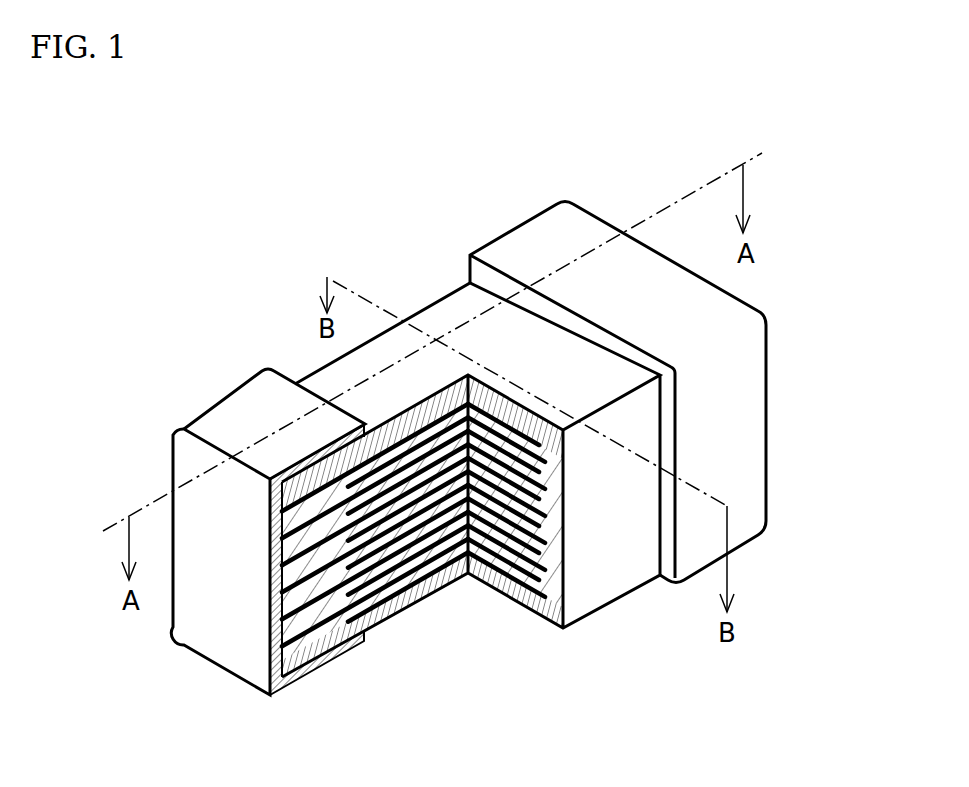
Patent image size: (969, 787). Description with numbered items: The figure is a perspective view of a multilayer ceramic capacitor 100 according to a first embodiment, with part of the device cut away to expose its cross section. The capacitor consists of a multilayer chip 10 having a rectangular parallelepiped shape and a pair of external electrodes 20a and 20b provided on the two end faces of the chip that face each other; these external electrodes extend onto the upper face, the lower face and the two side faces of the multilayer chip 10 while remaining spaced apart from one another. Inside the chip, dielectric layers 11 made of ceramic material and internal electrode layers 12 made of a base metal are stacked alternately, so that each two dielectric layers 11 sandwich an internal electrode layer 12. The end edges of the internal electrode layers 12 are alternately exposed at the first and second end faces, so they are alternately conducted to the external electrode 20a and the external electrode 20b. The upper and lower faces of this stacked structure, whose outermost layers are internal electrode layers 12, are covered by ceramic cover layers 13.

The multilayer ceramic capacitor 100 is at (868, 140).
The multilayer chip 10 is at (436, 497).
The dielectric layer 11 is at (400, 563).
The internal electrode layer 12 is at (383, 597).
The cover layer 13 is at (440, 315).
The external electrode 20a is at (204, 412).
The external electrode 20b is at (523, 249).